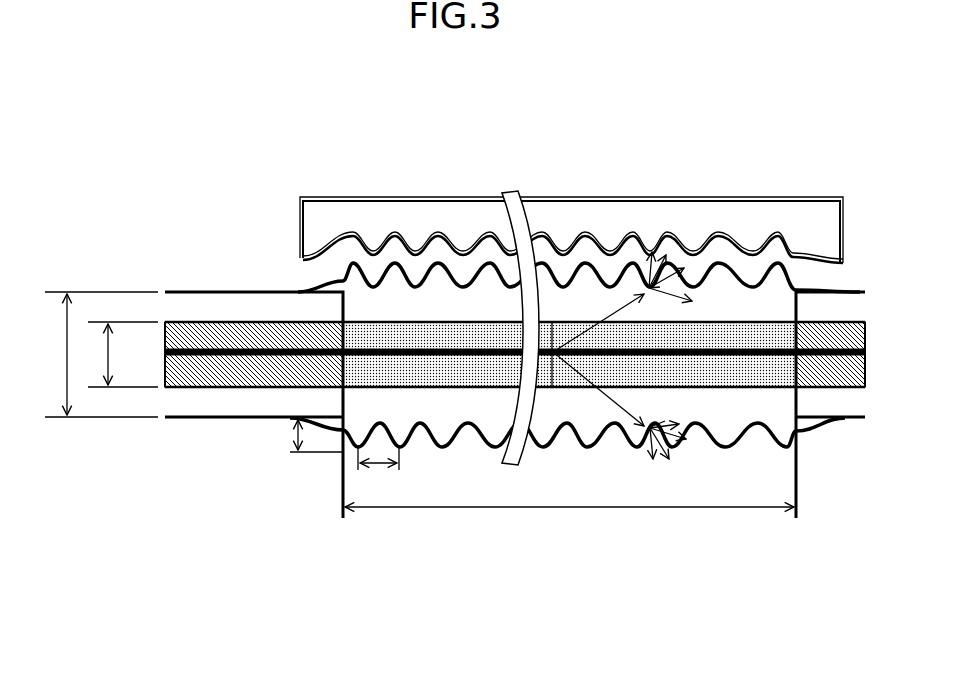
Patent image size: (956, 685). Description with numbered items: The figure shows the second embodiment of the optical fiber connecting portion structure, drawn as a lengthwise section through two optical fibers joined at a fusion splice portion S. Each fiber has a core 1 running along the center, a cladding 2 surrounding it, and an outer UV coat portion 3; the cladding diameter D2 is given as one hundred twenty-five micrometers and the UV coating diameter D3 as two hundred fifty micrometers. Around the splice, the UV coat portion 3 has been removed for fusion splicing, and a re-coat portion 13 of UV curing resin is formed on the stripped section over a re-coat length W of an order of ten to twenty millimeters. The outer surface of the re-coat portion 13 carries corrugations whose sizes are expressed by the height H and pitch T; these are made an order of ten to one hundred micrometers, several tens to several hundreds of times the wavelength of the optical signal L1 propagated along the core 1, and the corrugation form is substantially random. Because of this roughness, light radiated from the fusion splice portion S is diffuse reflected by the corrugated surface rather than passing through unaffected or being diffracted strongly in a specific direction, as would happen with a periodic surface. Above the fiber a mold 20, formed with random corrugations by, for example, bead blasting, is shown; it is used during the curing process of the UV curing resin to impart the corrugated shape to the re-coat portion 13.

The core 1 is at (165, 355).
The cladding 2 is at (183, 330).
The UV coat portion 3 is at (215, 305).
The re-coat portion 13 is at (357, 294).
The mold 20 is at (357, 213).
The fusion splice portion S is at (552, 322).
The optical signal L1 is at (643, 260).
The UV coating diameter D3 is at (97, 354).
The cladding diameter D2 is at (117, 354).
The corrugation height H is at (308, 436).
The corrugation pitch T is at (378, 469).
The re-coat length W is at (569, 519).